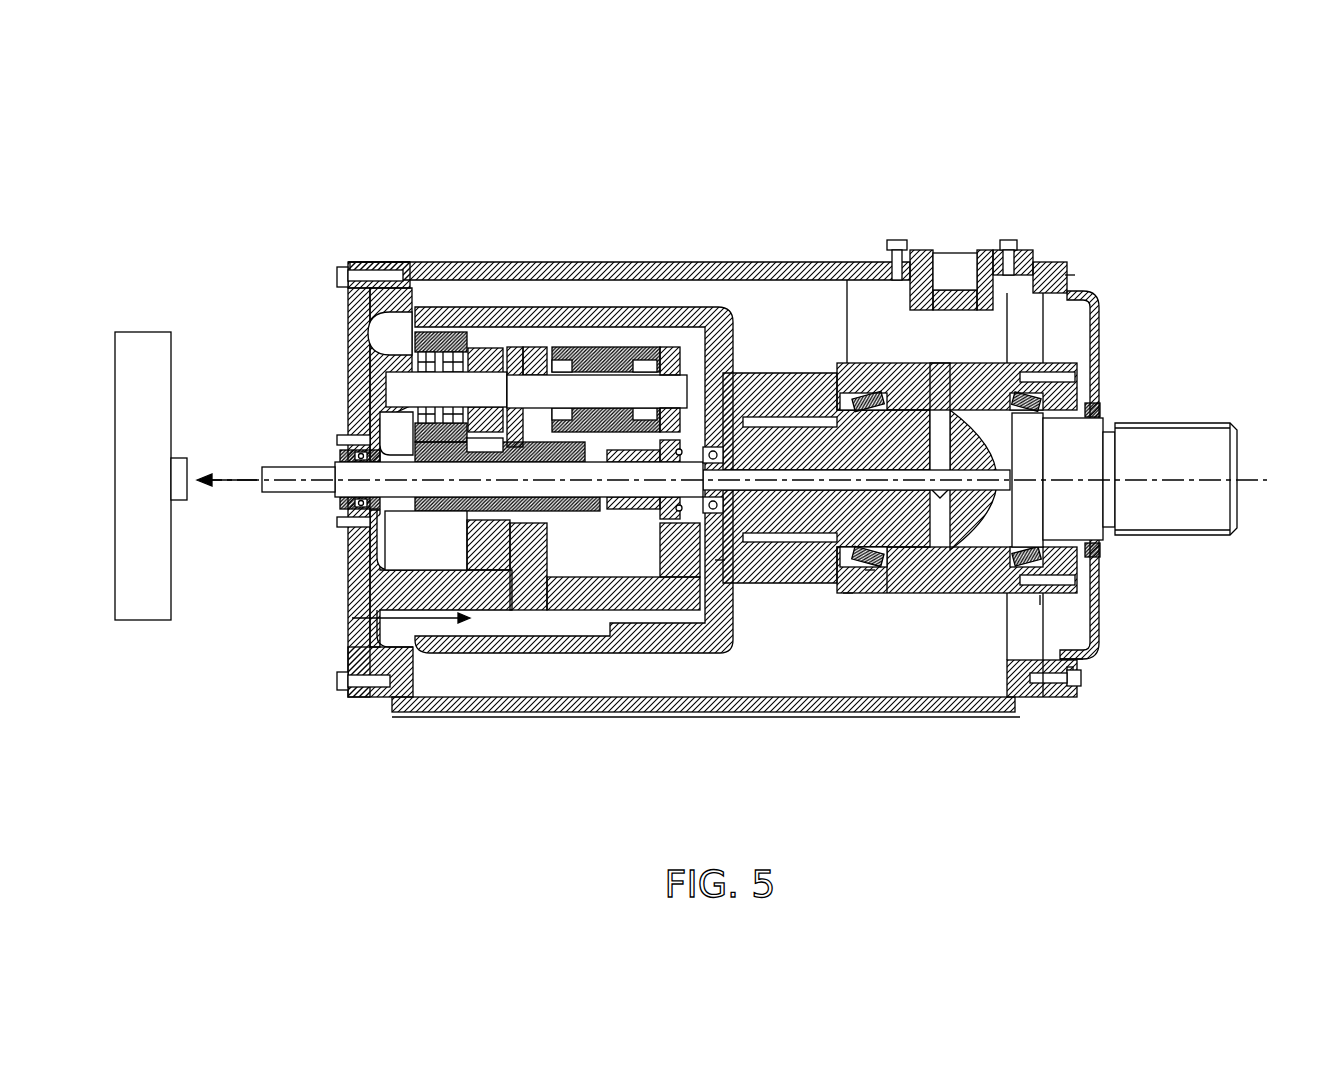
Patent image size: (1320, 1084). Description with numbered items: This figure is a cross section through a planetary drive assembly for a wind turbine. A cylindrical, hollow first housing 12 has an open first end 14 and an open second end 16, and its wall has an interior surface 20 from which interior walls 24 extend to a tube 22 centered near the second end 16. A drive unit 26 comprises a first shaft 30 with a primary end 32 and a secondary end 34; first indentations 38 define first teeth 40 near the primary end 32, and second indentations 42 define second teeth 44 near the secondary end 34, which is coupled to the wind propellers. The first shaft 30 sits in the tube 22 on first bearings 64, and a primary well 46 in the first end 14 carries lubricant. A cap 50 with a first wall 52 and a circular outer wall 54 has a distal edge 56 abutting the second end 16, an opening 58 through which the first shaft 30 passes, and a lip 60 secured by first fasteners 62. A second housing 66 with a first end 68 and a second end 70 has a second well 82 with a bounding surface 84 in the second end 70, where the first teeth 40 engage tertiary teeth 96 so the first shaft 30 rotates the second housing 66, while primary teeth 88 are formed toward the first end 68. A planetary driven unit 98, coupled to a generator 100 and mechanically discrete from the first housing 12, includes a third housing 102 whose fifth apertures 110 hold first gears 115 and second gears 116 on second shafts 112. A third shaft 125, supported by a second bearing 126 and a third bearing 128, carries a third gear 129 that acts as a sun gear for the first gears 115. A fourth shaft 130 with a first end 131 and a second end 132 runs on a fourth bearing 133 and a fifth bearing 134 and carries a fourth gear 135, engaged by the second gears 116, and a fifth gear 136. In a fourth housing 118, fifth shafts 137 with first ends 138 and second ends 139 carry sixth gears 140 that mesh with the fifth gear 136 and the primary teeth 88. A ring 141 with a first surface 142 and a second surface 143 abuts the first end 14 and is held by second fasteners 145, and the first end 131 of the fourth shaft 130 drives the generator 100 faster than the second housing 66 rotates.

The first housing 12 is at (860, 263).
The first end 14 is at (372, 700).
The second end 16 is at (1062, 692).
The interior surface 20 is at (1000, 700).
The tube 22 is at (1097, 330).
The interior walls 24 is at (900, 262).
The drive unit 26 is at (855, 575).
The first shaft 30 is at (1175, 440).
The primary end 32 is at (780, 562).
The secondary end 34 is at (1237, 455).
The first indentations 38 is at (848, 595).
The first teeth 40 is at (800, 565).
The second indentations 42 is at (1150, 430).
The second teeth 44 is at (1200, 423).
The primary well 46 is at (1100, 560).
The cap 50 is at (1017, 340).
The first wall 52 is at (1090, 655).
The outer wall 54 is at (1075, 682).
The distal edge 56 is at (1047, 692).
The opening 58 is at (1097, 418).
The lip 60 is at (1050, 268).
The first fasteners 62 is at (1077, 285).
The first bearings 64 is at (1047, 393).
The second housing 66 is at (833, 270).
The first end 68 is at (350, 655).
The second end 70 is at (965, 290).
The second well 82 is at (813, 453).
The bounding surface 84 is at (352, 618).
The primary teeth 88 is at (480, 316).
The tertiary teeth 96 is at (785, 425).
The planetary driven unit 98 is at (640, 526).
The generator 100 is at (142, 330).
The third housing 102 is at (560, 620).
The fifth apertures 110 is at (773, 387).
The second shafts 112 is at (528, 562).
The first gears 115 is at (745, 330).
The second gears 116 is at (645, 360).
The fourth housing 118 is at (350, 600).
The third shaft 125 is at (857, 313).
The second bearing 126 is at (870, 483).
The third bearing 128 is at (712, 520).
The third gear 129 is at (607, 600).
The fourth shaft 130 is at (283, 467).
The first end 131 is at (258, 481).
The second end 132 is at (578, 562).
The fourth bearing 133 is at (465, 600).
The fifth bearing 134 is at (370, 520).
The fourth gear 135 is at (515, 620).
The fifth gear 136 is at (560, 355).
The fifth shafts 137 is at (425, 340).
The first end 138 is at (415, 378).
The second end 139 is at (600, 392).
The sixth gears 140 is at (500, 385).
The ring 141 is at (352, 262).
The first surface 142 is at (380, 300).
The second surface 143 is at (350, 345).
The second fasteners 145 is at (335, 278).